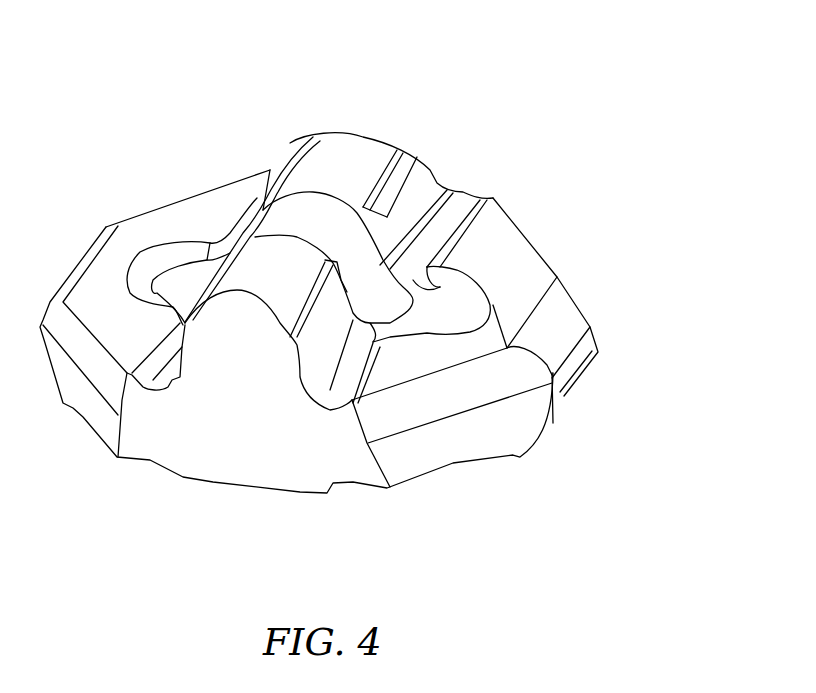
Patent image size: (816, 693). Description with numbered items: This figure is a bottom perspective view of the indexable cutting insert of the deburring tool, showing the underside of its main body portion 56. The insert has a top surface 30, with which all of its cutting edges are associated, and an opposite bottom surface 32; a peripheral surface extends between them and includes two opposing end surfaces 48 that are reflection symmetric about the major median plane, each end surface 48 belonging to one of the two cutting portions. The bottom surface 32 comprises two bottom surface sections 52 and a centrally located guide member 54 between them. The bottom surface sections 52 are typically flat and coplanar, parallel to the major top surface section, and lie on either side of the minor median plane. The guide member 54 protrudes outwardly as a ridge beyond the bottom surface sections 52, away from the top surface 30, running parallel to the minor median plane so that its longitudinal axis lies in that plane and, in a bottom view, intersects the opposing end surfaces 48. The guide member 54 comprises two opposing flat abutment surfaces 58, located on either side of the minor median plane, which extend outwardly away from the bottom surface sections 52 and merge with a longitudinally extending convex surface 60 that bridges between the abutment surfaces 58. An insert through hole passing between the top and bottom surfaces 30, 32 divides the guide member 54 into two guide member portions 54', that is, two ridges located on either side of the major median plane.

The top surface 30 is at (340, 519).
The bottom surface 32 is at (582, 105).
The end surface 48 is at (237, 420).
The bottom surface section 52 is at (146, 232).
The guide member 54 is at (310, 230).
The guide member portion 54' is at (213, 185).
The main body portion 56 is at (615, 295).
The abutment surface 58 is at (433, 193).
The convex surface 60 is at (373, 157).